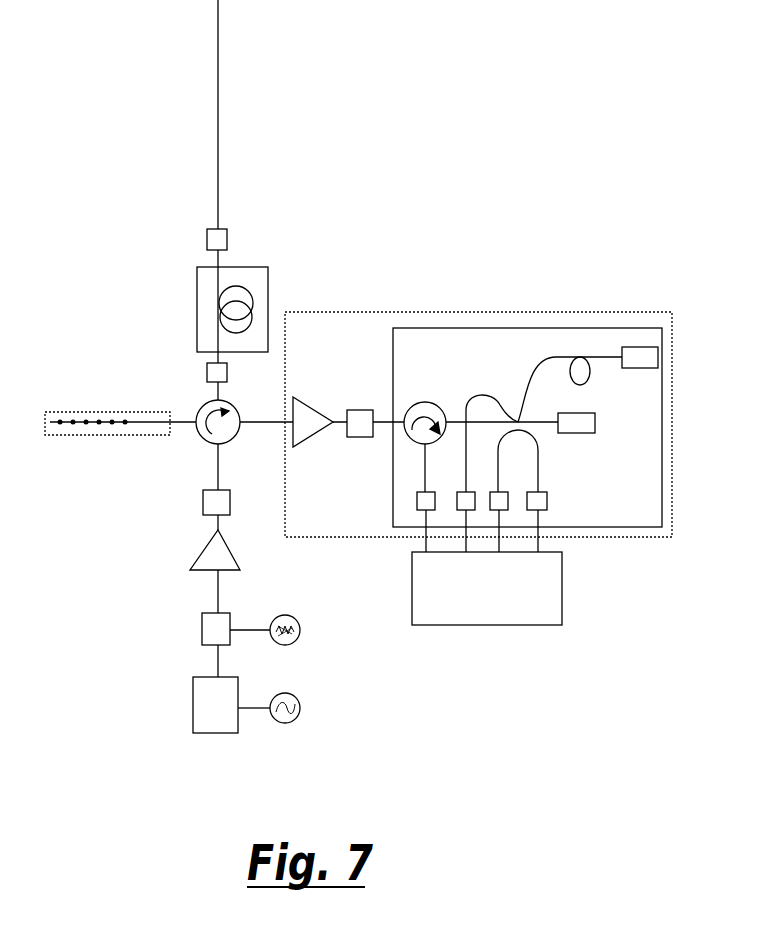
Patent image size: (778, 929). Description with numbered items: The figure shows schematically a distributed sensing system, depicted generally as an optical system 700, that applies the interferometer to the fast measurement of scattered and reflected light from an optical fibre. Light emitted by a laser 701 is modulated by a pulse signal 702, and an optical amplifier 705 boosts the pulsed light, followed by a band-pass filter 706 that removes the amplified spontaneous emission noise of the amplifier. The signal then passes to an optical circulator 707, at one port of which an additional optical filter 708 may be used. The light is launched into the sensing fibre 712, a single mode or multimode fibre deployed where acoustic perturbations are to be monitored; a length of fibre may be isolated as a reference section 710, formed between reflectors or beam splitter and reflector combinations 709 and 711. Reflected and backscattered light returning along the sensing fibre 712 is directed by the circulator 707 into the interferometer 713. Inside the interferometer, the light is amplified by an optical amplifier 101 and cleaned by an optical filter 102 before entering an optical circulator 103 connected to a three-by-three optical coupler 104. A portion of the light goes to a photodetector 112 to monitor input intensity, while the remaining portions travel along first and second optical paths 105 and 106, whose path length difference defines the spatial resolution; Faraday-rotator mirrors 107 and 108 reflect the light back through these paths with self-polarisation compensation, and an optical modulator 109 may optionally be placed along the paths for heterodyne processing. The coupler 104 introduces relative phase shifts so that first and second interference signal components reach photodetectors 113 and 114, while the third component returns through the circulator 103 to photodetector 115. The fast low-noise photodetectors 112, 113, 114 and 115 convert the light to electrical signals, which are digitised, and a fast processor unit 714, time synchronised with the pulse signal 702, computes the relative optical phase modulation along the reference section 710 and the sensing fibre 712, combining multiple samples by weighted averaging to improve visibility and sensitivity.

The optical system 700 is at (375, 190).
The laser 701 is at (212, 737).
The pulse signal 702 is at (287, 727).
The optical amplifier 705 is at (200, 548).
The band-pass filter 706 is at (202, 500).
The optical circulator 707 is at (200, 437).
The optical filter 708 is at (127, 410).
The reflector or beam splitter 709 is at (207, 373).
The reference section 710 is at (197, 302).
The reflector or beam splitter 711 is at (207, 238).
The sensing fibre 712 is at (218, 153).
The interferometer 713 is at (323, 312).
The processor unit 714 is at (412, 587).
The optical amplifier 101 is at (310, 447).
The optical filter 102 is at (363, 437).
The optical circulator 103 is at (423, 403).
The 3×3 optical coupler 104 is at (517, 420).
The first optical path 105 is at (521, 419).
The second optical path 106 is at (533, 425).
The Faraday-rotator mirror 107 is at (640, 348).
The Faraday-rotator mirror 108 is at (595, 413).
The optical modulator 109 is at (581, 358).
The photodetector 112 is at (508, 503).
The photodetector 113 is at (547, 500).
The photodetector 114 is at (452, 510).
The photodetector 115 is at (417, 502).